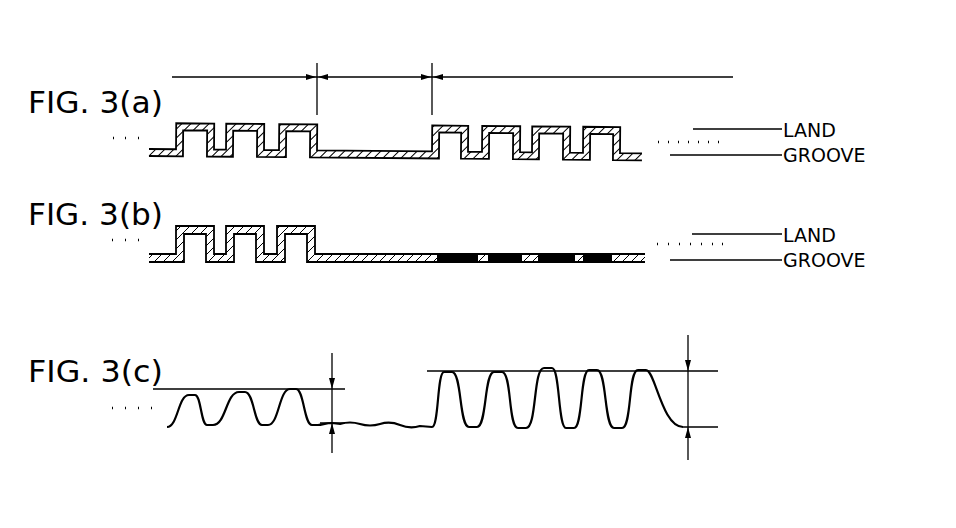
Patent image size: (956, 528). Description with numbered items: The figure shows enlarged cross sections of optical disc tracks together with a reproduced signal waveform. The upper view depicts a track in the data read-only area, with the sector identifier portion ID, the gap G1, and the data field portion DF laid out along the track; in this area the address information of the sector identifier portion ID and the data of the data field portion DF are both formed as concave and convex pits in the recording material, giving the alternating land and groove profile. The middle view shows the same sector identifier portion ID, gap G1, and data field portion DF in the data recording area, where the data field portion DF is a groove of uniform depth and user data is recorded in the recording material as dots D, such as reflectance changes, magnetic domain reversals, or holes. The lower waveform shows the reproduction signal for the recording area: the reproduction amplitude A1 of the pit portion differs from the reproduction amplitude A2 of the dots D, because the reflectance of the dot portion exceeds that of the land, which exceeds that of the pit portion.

The dots D is at (592, 267).
The reproduction amplitude of the pit portion A1 is at (261, 403).
The reproduction amplitude of the dot portion A2 is at (576, 397).
The sector identifier portion ID is at (244, 58).
The gap G1 is at (374, 76).
The data field portion DF is at (582, 59).